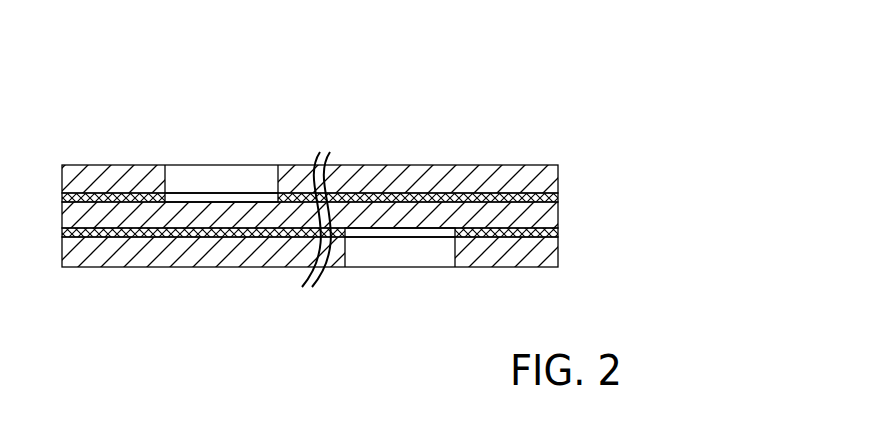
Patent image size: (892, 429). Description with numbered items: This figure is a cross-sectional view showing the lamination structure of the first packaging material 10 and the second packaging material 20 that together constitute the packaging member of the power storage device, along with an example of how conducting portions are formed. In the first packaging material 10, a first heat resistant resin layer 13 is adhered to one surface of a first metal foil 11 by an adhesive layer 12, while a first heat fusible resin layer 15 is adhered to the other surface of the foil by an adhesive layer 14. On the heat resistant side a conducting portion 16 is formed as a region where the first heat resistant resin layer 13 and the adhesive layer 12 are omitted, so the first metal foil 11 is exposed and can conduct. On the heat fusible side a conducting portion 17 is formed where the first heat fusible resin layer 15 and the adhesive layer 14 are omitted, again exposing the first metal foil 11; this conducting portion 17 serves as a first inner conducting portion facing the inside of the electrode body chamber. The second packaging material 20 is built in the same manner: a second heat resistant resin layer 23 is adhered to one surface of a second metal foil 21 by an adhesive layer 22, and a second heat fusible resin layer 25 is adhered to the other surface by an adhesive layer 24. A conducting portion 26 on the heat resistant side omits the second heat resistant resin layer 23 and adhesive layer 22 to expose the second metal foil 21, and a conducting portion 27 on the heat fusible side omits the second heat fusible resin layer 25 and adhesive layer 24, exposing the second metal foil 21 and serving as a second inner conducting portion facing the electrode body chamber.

The first packaging material 10 is at (387, 176).
The second packaging material 20 is at (518, 105).
The first metal foil 11 is at (550, 220).
The second metal foil 21 is at (387, 212).
The adhesive layer 12 is at (558, 197).
The adhesive layer 22 is at (387, 181).
The first heat resistant resin layer 13 is at (552, 183).
The second heat resistant resin layer 23 is at (387, 159).
The adhesive layer 14 is at (558, 235).
The adhesive layer 24 is at (387, 246).
The first heat fusible resin layer 15 is at (552, 257).
The second heat fusible resin layer 25 is at (387, 268).
The conducting portion 16 is at (223, 200).
The conducting portion 26 is at (226, 137).
The conducting portion 17 is at (397, 238).
The conducting portion 27 is at (400, 287).